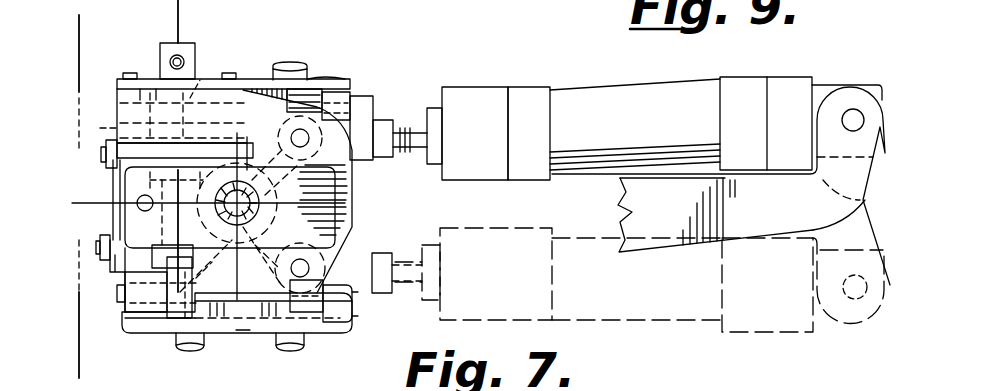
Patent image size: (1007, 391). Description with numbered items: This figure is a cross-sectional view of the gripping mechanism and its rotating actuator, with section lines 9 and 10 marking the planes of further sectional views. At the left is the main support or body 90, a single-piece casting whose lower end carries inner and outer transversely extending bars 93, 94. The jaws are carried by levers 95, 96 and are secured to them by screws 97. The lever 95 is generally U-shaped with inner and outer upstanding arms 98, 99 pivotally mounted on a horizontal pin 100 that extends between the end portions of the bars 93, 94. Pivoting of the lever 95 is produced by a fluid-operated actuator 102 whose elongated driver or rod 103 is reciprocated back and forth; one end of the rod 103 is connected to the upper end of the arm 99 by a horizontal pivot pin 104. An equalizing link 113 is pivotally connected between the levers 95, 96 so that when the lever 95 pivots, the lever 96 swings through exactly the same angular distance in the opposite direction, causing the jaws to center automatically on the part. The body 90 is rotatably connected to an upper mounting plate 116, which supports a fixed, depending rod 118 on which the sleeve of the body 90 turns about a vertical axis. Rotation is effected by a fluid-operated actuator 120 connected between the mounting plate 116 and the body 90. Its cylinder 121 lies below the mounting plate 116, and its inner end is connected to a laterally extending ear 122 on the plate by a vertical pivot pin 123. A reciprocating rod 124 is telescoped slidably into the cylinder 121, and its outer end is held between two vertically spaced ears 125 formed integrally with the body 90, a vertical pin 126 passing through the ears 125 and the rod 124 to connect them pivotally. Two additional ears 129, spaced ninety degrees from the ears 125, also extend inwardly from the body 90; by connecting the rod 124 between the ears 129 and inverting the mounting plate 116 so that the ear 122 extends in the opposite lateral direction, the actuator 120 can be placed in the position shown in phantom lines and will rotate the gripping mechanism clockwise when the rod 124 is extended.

The section line 9— 9 is at (222, 13).
The section line 10— 10 is at (124, 28).
The main support 90 is at (123, 190).
The inner transversely extending bar 93 is at (307, 89).
The outer transversely extending bar 94 is at (190, 98).
The lever 95 is at (240, 334).
The lever 96 is at (340, 76).
The screws 97 is at (290, 62).
The inner upstanding arm 98 is at (350, 98).
The outer upstanding arm 99 is at (100, 128).
The horizontal pin 100 is at (233, 318).
The fluid-operated actuator 102 is at (116, 84).
The driver or rod 103 is at (178, 316).
The horizontal pivot pin 104 is at (362, 112).
The equalizing link 113 is at (110, 212).
The upper mounting member or plate 116 is at (618, 216).
The fixed depending rod 118 is at (250, 210).
The fluid-operated actuator 120 is at (560, 82).
The cylinder 121 is at (630, 93).
The laterally extending ear 122 is at (865, 160).
The vertical pivot pin 123 is at (858, 110).
The reciprocating rod 124 is at (415, 130).
The vertically spaced ears 125 is at (350, 198).
The vertical pin 126 is at (306, 142).
The additional ears 129 is at (350, 233).